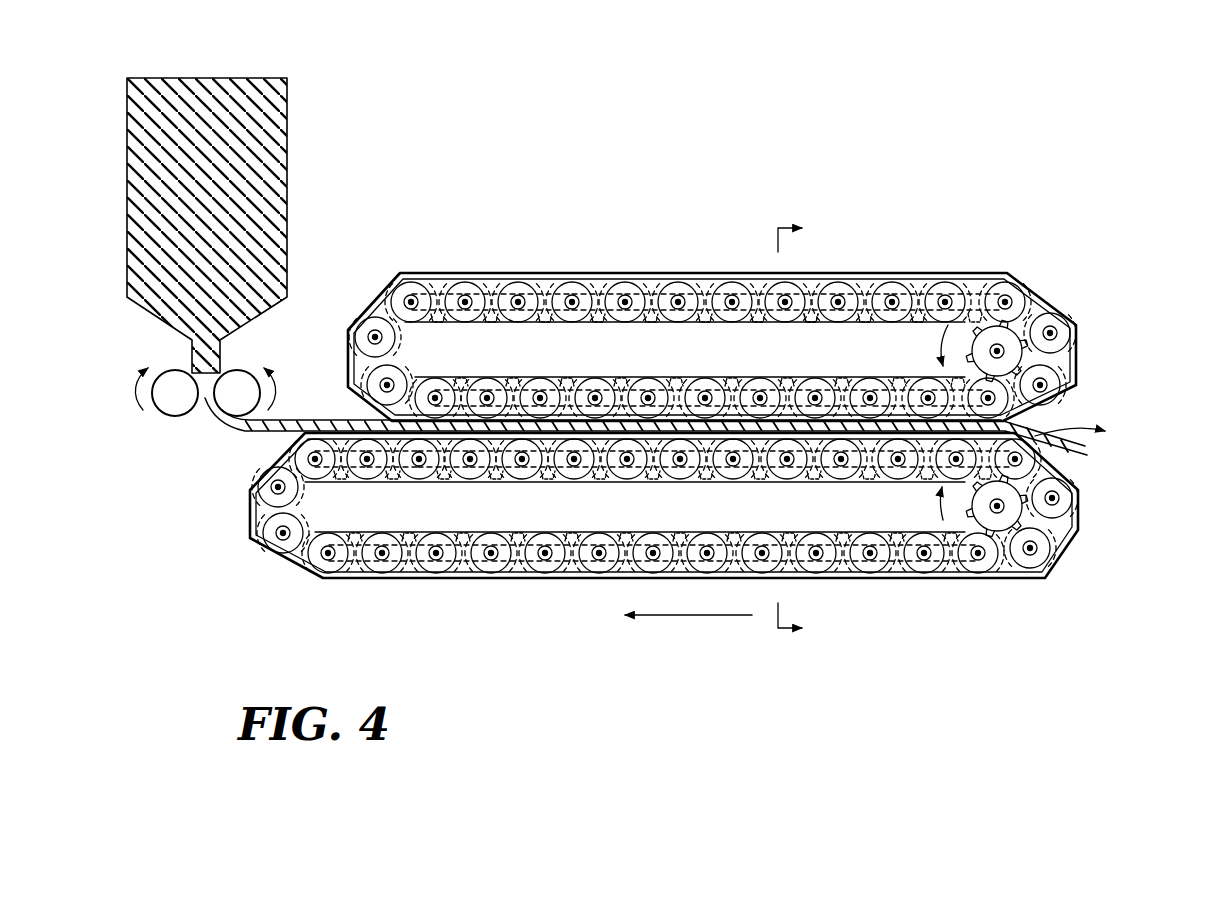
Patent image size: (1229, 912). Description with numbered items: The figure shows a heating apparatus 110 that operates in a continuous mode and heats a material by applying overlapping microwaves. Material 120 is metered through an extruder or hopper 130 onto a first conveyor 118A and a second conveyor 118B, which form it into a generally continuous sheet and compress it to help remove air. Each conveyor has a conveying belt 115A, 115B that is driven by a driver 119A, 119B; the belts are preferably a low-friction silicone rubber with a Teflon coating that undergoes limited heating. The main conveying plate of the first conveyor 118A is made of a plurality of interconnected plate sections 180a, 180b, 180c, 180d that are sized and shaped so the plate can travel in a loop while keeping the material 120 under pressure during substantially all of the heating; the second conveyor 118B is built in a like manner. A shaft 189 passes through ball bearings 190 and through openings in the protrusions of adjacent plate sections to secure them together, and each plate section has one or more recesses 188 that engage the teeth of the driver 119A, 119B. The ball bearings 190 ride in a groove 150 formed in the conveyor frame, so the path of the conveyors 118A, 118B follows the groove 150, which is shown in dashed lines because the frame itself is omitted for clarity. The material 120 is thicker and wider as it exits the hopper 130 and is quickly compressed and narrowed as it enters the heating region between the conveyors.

The heating apparatus 110 is at (985, 193).
The hopper 130 is at (213, 88).
The material 120 is at (315, 420).
The first conveyor 118A is at (1153, 272).
The second conveyor 118B is at (1153, 432).
The conveying belt 115A is at (880, 276).
The conveying belt 115B is at (823, 577).
The driver 119A is at (1000, 338).
The driver 119B is at (1000, 510).
The groove 150 is at (378, 320).
The plate section 180a is at (540, 283).
The plate section 180b is at (597, 283).
The plate section 180c is at (650, 283).
The plate section 180d is at (705, 283).
The recess 188 is at (813, 323).
The shaft 189 is at (543, 556).
The ball bearings 190 is at (385, 556).